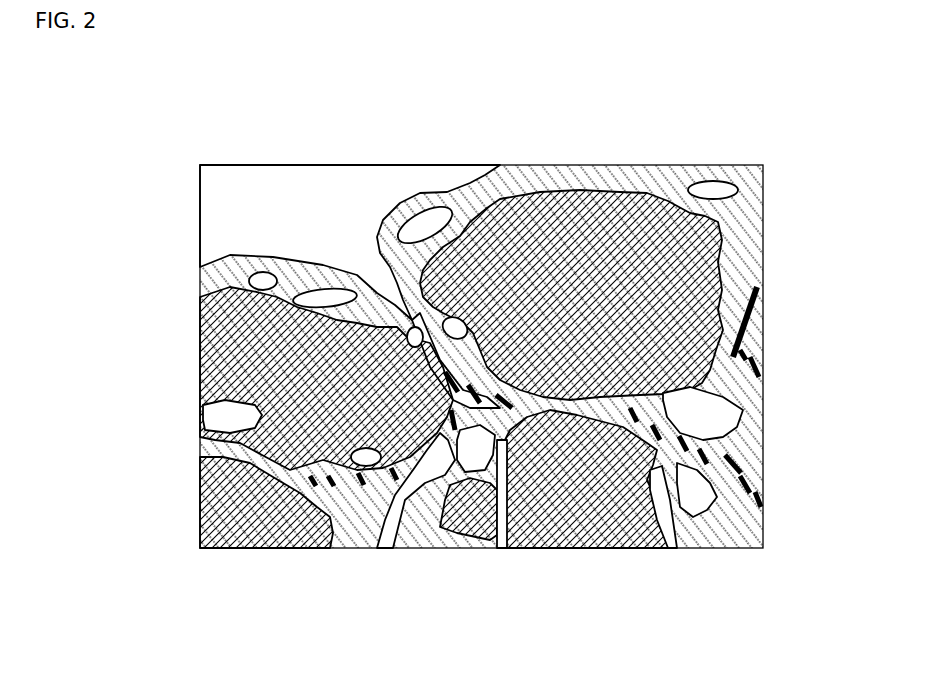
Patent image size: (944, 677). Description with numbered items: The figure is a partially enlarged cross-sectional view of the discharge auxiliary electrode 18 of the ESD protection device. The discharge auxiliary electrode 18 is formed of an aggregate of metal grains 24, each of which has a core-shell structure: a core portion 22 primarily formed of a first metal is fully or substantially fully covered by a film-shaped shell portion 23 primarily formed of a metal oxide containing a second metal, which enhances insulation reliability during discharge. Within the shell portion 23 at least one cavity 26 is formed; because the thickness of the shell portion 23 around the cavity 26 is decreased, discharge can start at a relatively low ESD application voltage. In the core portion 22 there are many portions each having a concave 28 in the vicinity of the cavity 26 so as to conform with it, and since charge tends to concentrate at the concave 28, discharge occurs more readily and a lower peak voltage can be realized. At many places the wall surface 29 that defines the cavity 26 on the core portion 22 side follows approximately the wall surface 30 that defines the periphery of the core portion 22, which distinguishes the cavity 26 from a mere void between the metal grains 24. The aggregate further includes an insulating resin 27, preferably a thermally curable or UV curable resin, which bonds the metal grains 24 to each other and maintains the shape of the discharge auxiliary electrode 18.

The discharge auxiliary electrode 18 is at (214, 83).
The core portion 22 is at (687, 263).
The shell portion 23 is at (256, 262).
The metal grain 24 is at (560, 162).
The cavity 26 is at (428, 222).
The insulating resin 27 is at (453, 428).
The concave 28 is at (722, 185).
The wall surface 29 is at (306, 297).
The wall surface 30 is at (330, 290).